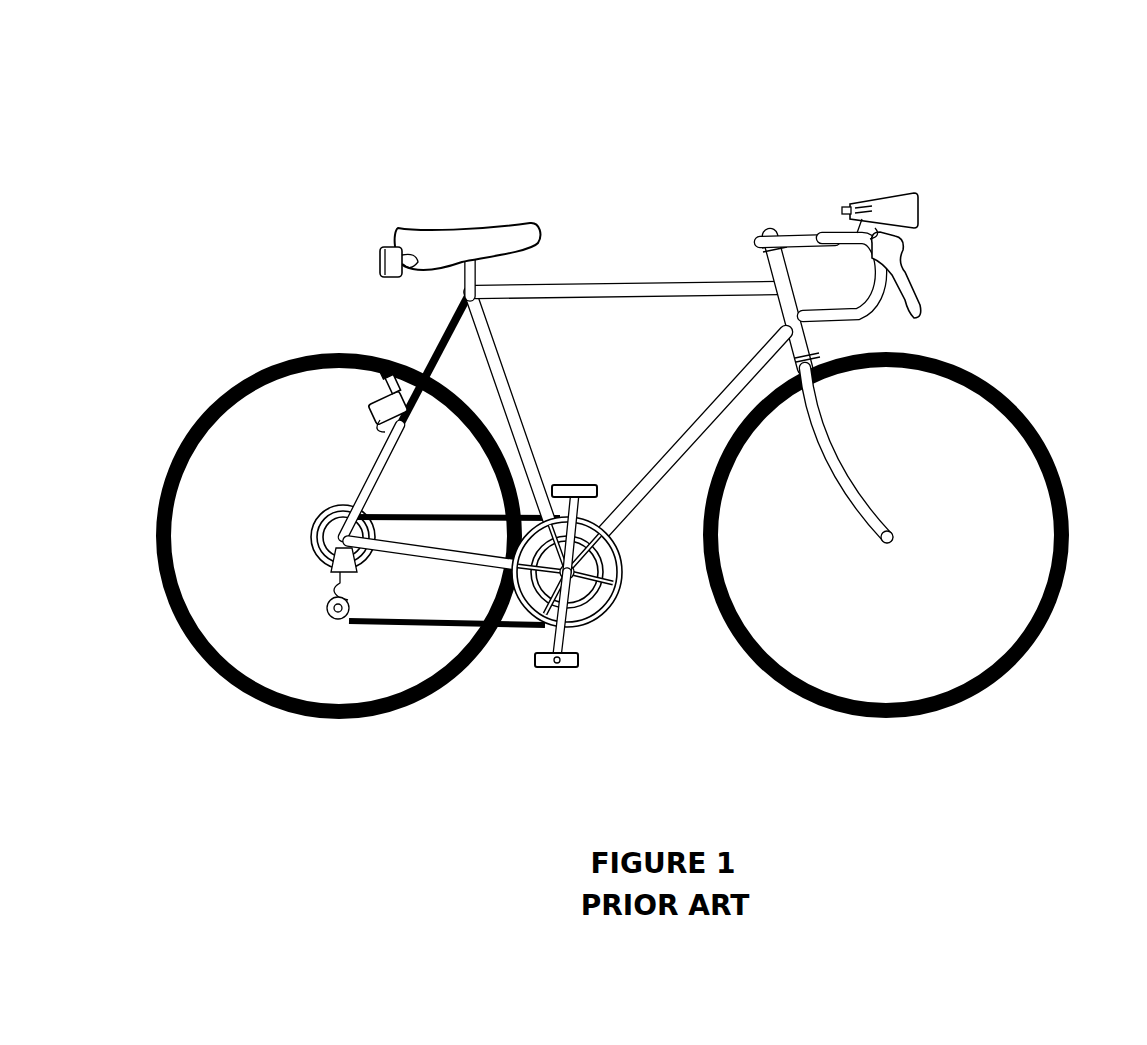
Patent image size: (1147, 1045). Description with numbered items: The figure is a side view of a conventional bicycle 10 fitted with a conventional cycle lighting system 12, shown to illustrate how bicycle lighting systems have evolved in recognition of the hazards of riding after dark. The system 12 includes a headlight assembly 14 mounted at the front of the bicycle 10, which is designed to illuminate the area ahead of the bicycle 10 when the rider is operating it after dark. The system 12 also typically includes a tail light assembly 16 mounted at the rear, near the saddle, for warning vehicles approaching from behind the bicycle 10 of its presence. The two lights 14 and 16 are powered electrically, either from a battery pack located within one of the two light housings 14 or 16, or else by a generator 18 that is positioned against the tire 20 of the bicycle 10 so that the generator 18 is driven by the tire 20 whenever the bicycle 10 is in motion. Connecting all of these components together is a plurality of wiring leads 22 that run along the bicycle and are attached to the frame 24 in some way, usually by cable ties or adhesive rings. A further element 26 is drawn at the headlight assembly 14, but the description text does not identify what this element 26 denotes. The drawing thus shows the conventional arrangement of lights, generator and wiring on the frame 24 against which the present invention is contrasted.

The bicycle 10 is at (312, 150).
The cycle lighting system 12 is at (1030, 183).
The headlight assembly 14 is at (883, 195).
The tail light assembly 16 is at (385, 247).
The generator 18 is at (370, 400).
The tire 20 is at (437, 688).
The wiring leads 22 is at (621, 286).
The frame 24 is at (657, 483).
The switch 26 is at (840, 200).